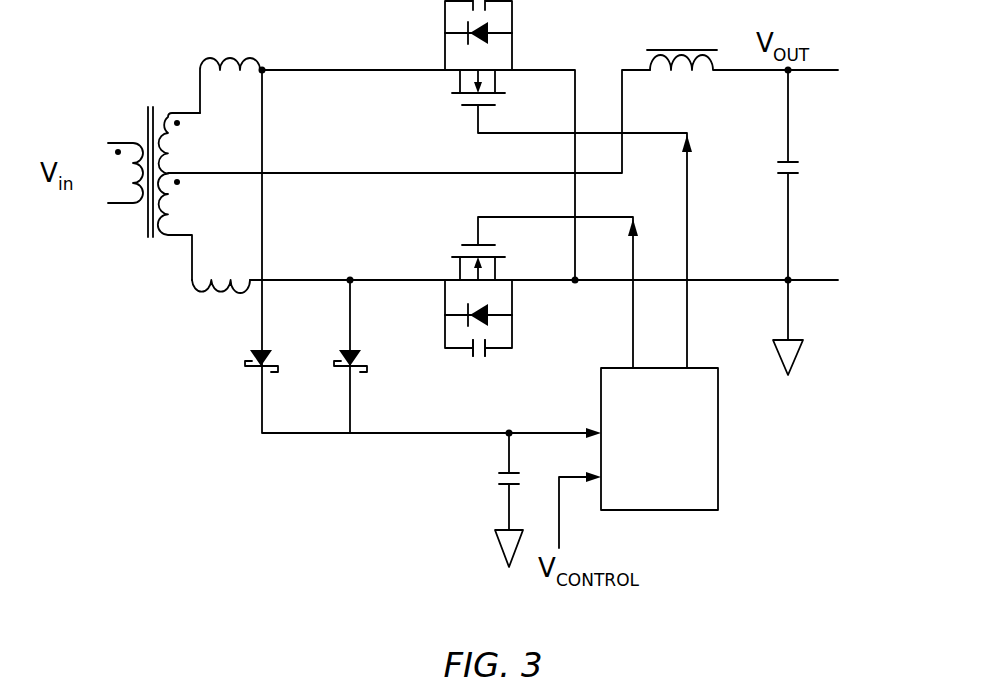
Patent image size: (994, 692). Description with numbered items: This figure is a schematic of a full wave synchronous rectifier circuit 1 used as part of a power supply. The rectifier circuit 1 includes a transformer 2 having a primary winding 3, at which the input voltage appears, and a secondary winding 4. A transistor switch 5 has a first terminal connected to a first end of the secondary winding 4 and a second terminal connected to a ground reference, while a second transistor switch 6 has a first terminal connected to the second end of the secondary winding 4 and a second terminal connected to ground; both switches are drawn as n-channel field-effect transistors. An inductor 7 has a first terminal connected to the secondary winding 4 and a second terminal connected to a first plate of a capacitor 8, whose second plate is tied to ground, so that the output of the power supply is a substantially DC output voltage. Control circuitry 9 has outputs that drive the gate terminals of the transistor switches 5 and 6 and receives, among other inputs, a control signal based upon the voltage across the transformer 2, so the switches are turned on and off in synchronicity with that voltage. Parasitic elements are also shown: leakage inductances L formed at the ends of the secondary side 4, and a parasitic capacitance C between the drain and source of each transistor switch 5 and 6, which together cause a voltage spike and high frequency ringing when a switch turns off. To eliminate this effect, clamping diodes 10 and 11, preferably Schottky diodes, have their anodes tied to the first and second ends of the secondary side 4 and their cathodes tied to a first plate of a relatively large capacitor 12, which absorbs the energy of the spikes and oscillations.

The rectifier circuit 1 is at (70, 80).
The transformer 2 is at (117, 230).
The primary winding 3 is at (132, 137).
The secondary winding 4 is at (175, 245).
The transistor switch 5 is at (450, 107).
The second transistor switch 6 is at (452, 247).
The inductor 7 is at (685, 43).
The capacitor 8 is at (803, 177).
The control circuitry 9 is at (712, 470).
The clamping diode 10 is at (272, 342).
The clamping diode 11 is at (357, 347).
The capacitor 12 is at (490, 485).
The leakage inductance L is at (238, 47).
The parasitic capacitance C is at (480, 367).